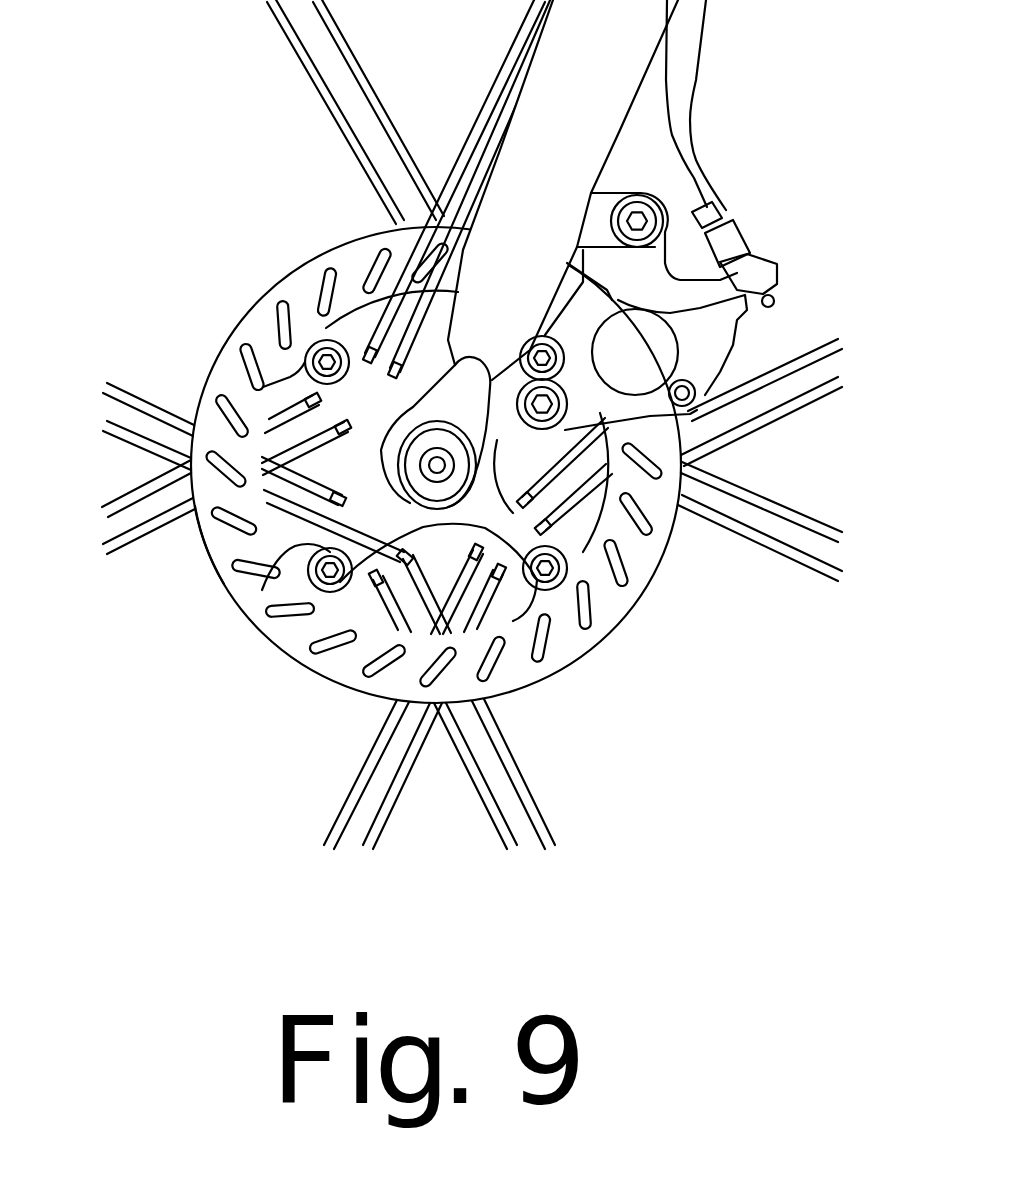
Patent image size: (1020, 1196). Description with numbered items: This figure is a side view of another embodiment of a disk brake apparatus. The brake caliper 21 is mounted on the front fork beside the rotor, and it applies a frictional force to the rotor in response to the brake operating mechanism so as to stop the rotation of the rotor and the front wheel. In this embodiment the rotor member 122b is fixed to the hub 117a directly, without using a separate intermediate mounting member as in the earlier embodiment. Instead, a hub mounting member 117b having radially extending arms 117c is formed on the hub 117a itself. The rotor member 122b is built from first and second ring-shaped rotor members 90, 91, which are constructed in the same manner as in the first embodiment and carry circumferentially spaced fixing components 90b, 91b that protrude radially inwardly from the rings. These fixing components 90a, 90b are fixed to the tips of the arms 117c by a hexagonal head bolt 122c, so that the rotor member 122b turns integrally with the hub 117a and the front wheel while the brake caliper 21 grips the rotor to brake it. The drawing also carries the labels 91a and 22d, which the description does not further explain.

The brake caliper 21 is at (737, 350).
The spoke head 22d is at (527, 496).
The first ring-shaped rotor member 90 is at (292, 284).
The fixing component 90a is at (314, 258).
The fixing component 90b is at (292, 365).
The second ring-shaped rotor member 91 is at (393, 458).
The outer braking band 91a is at (433, 416).
The fixing component 91b is at (334, 339).
The hub 117a is at (618, 555).
The hub mounting member 117b is at (267, 583).
The radially extending arms 117c is at (267, 503).
The rotor member 122b is at (478, 585).
The hexagonal head bolt 122c is at (330, 573).